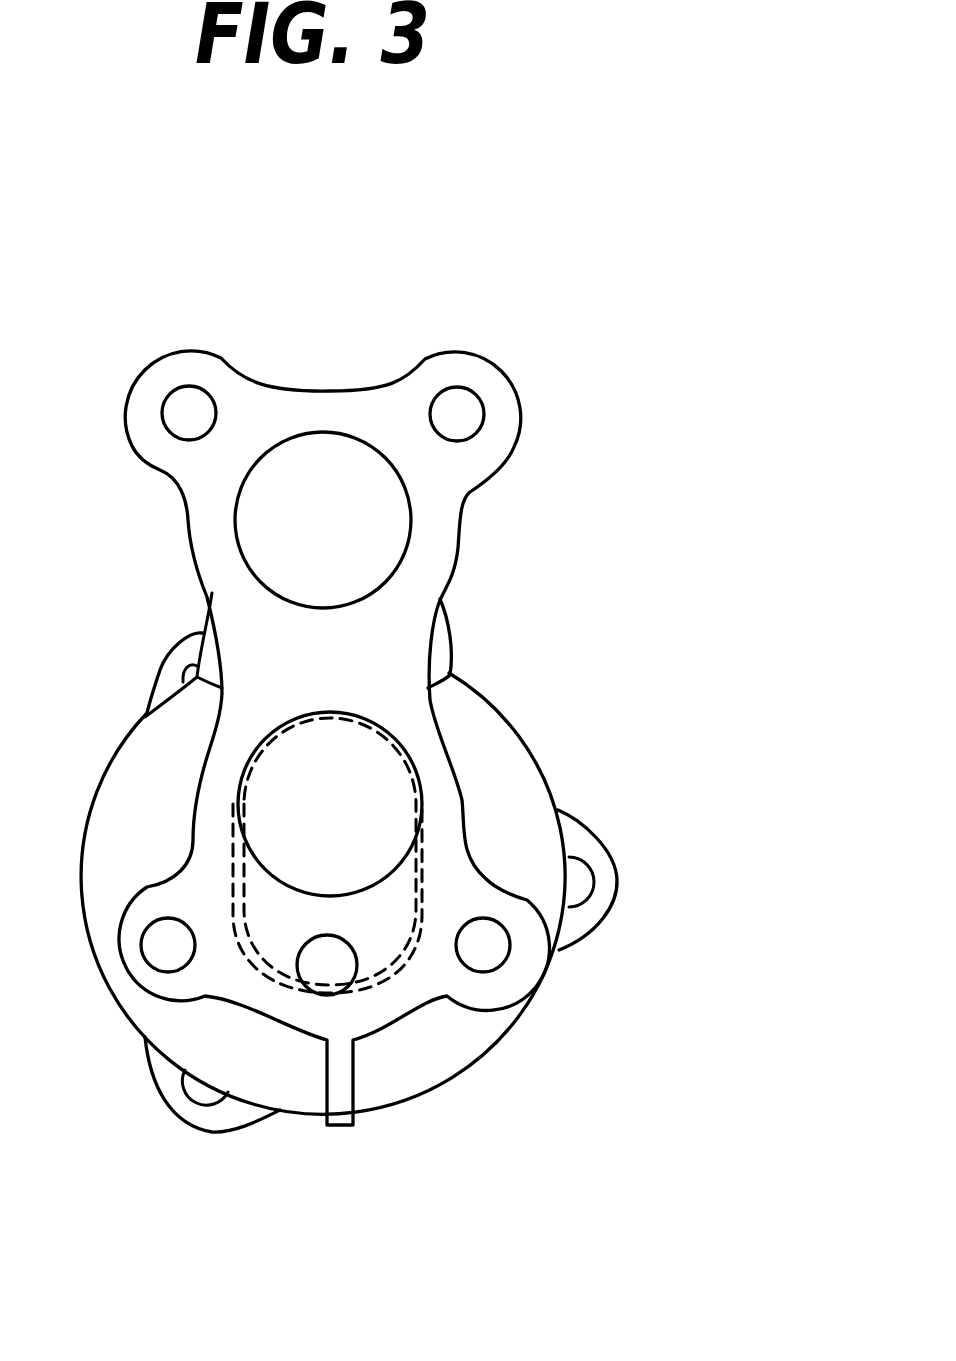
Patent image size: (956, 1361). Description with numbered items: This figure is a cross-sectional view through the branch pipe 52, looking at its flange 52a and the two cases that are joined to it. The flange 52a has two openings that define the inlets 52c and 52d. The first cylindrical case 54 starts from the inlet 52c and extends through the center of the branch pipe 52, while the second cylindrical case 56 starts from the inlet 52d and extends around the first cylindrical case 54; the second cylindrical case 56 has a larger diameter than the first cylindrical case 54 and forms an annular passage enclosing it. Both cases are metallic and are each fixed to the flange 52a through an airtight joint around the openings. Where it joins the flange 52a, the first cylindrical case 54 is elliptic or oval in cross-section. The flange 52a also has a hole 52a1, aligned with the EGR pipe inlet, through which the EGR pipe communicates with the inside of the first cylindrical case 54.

The branch pipe 52 is at (466, 340).
The flange 52a is at (517, 383).
The hole 52a1 is at (315, 975).
The inlet 52c is at (383, 773).
The inlet 52d is at (381, 496).
The first cylindrical case 54 is at (397, 965).
The second cylindrical case 56 is at (555, 797).